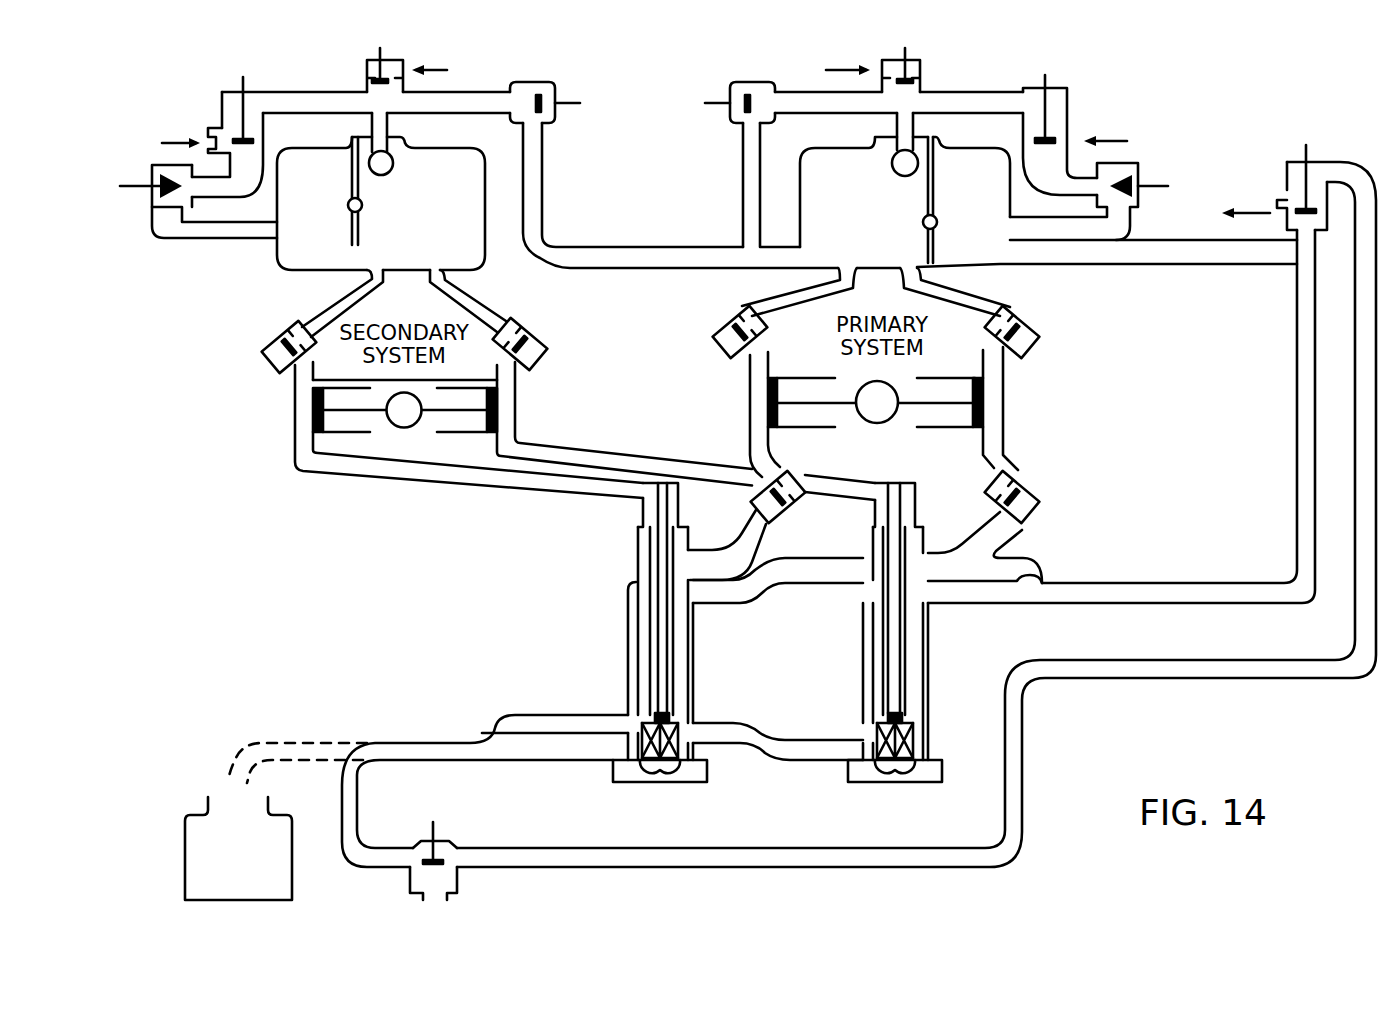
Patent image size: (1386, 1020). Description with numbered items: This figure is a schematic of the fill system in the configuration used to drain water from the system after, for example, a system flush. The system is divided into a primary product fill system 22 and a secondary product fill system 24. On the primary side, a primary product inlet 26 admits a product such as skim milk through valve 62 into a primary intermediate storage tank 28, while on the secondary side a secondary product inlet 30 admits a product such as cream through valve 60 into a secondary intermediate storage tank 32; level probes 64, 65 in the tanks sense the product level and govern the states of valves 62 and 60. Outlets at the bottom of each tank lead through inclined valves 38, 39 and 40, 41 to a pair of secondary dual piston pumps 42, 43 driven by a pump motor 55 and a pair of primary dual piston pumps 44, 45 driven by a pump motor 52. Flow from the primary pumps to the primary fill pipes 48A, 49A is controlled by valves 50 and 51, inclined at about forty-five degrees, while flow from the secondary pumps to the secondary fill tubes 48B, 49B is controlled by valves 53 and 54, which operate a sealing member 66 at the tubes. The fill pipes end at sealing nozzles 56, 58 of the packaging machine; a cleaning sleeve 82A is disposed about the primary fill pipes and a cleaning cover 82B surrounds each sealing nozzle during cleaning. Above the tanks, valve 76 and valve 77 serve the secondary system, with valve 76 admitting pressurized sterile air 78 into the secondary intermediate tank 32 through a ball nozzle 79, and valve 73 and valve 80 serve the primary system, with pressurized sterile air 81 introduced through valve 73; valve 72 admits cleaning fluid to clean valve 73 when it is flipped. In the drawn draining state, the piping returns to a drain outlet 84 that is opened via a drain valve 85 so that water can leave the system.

The primary product fill system 22 is at (1016, 70).
The secondary product fill system 24 is at (337, 70).
The primary product inlet 26 is at (1110, 130).
The primary intermediate storage tank 28 is at (835, 148).
The secondary product inlet 30 is at (178, 138).
The secondary intermediate storage tank 32 is at (284, 252).
The valve 38 is at (277, 346).
The valve 39 is at (542, 333).
The valve 40 is at (724, 320).
The valve 41 is at (1033, 323).
The secondary dual piston pump 42 is at (296, 413).
The secondary dual piston pump 43 is at (512, 415).
The primary dual piston pump 44 is at (1005, 407).
The primary dual piston pump 45 is at (748, 404).
The primary fill pipe 48A is at (674, 688).
The secondary fill tube 48B is at (664, 658).
The primary fill pipe 49A is at (881, 674).
The secondary fill tube 49B is at (893, 648).
The valve 50 is at (783, 513).
The valve 51 is at (1040, 487).
The pump motor 52 is at (879, 424).
The valve 53 is at (643, 505).
The valve 54 is at (920, 492).
The pump motor 55 is at (405, 424).
The sealing nozzle 56 is at (640, 723).
The sealing nozzle 58 is at (918, 730).
The valve 60 is at (153, 207).
The valve 62 is at (1140, 170).
The level probe 64 is at (934, 210).
The level probe 65 is at (352, 193).
The sealing member 66 is at (662, 717).
The valve 72 is at (1068, 105).
The valve 73 is at (918, 60).
The valve 76 is at (390, 60).
The valve 77 is at (556, 91).
The pressurized sterile air 78 is at (448, 69).
The ball nozzle 79 is at (390, 176).
The valve 80 is at (730, 90).
The pressurized sterile air 81 is at (826, 69).
The cleaning sleeve 82A is at (722, 760).
The cleaning cover 82B is at (648, 787).
The drain outlet 84 is at (435, 902).
The drain valve 85 is at (444, 845).